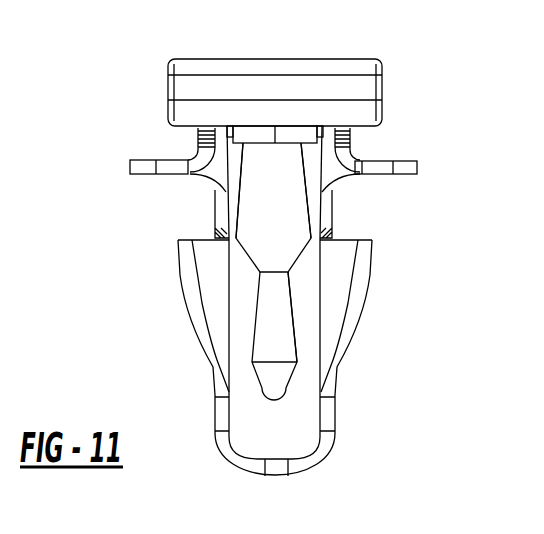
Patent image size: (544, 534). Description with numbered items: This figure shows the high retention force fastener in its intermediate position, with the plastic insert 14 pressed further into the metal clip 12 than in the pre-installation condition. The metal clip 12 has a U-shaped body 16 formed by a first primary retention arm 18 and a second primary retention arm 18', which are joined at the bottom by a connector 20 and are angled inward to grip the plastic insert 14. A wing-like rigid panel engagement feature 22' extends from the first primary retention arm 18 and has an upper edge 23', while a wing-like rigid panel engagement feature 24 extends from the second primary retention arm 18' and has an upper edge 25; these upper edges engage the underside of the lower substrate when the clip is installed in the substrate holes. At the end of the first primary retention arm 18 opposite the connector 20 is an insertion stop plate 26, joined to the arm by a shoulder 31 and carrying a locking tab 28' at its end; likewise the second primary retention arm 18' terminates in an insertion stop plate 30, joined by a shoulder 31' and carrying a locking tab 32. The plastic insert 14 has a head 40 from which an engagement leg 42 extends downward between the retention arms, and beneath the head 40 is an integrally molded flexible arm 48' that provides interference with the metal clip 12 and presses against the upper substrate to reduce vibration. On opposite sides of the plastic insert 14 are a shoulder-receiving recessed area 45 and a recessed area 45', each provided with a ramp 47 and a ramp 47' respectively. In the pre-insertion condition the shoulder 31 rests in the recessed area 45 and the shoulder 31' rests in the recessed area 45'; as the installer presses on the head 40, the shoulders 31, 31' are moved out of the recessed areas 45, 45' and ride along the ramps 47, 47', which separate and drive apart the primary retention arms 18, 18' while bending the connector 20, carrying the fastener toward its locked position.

The metal clip 12 is at (342, 330).
The plastic insert 14 is at (305, 92).
The U-shaped body 16 is at (222, 420).
The first primary retention arm 18 is at (197, 337).
The second primary retention arm 18' is at (362, 337).
The connector 20 is at (275, 466).
The wing-like rigid panel engagement feature 22' is at (170, 317).
The upper edge 23' is at (156, 238).
The wing-like rigid panel engagement feature 24 is at (345, 300).
The upper edge 25 is at (348, 238).
The insertion stop plate 26 is at (135, 167).
The locking tab 28' is at (155, 173).
The insertion stop plate 30 is at (407, 168).
The shoulder 31 is at (148, 189).
The shoulder 31' is at (420, 182).
The locking tab 32 is at (348, 156).
The head 40 is at (205, 68).
The engagement leg 42 is at (292, 215).
The recessed area 45 is at (224, 337).
The recessed area 45' is at (350, 334).
The ramp 47 is at (185, 235).
The ramp 47' is at (378, 215).
The flexible arm 48' is at (202, 107).